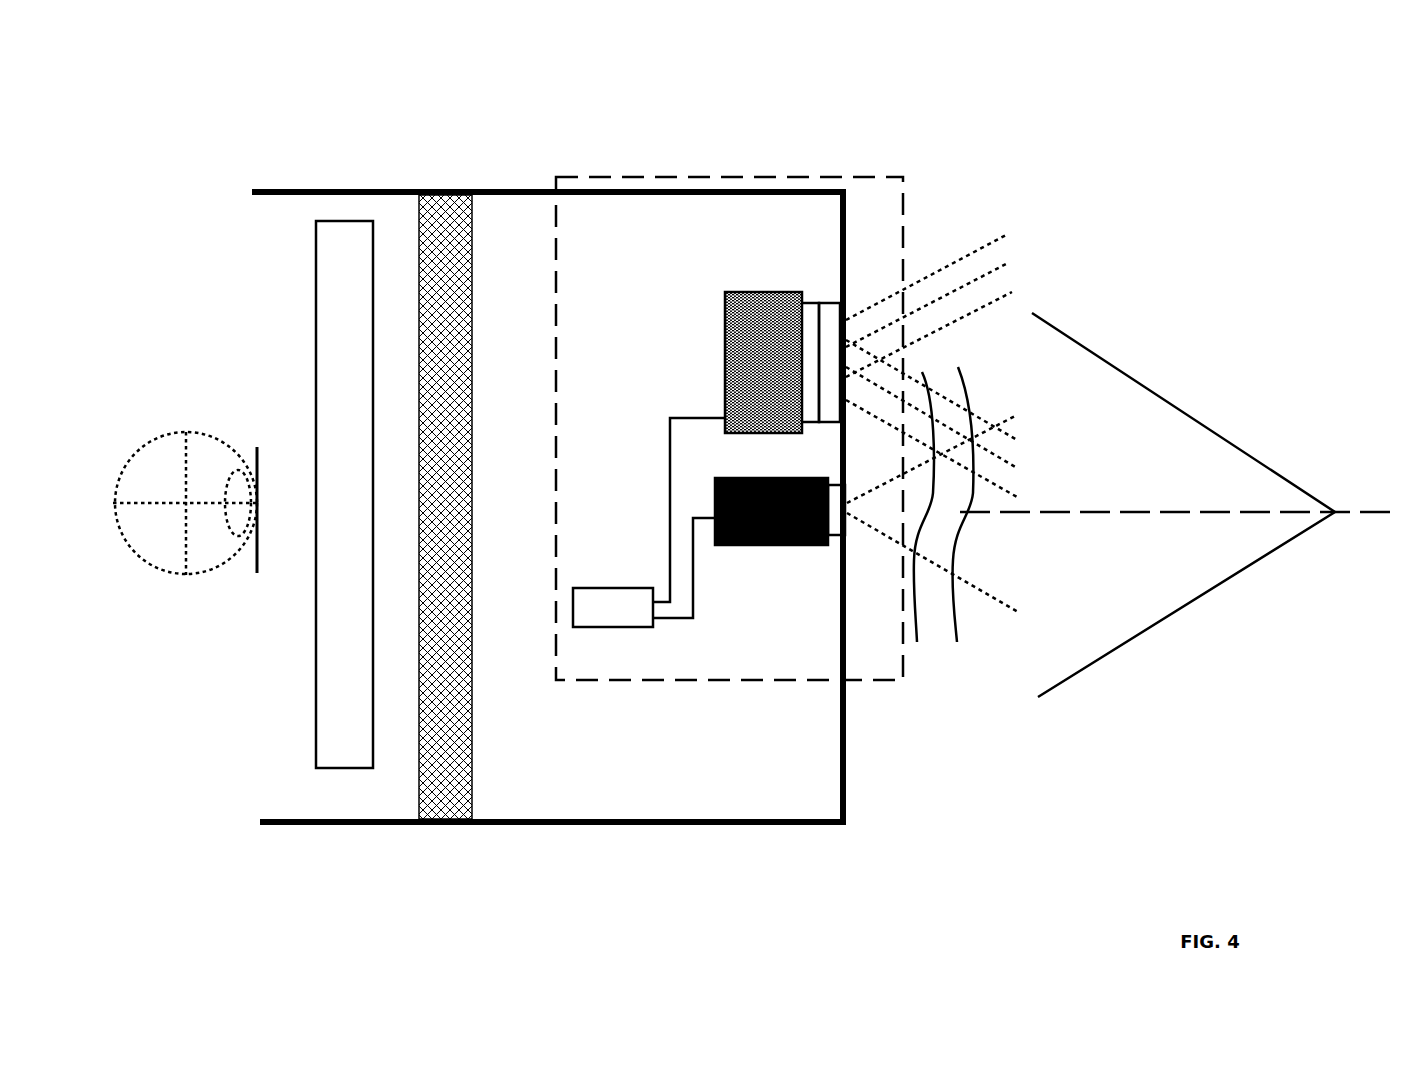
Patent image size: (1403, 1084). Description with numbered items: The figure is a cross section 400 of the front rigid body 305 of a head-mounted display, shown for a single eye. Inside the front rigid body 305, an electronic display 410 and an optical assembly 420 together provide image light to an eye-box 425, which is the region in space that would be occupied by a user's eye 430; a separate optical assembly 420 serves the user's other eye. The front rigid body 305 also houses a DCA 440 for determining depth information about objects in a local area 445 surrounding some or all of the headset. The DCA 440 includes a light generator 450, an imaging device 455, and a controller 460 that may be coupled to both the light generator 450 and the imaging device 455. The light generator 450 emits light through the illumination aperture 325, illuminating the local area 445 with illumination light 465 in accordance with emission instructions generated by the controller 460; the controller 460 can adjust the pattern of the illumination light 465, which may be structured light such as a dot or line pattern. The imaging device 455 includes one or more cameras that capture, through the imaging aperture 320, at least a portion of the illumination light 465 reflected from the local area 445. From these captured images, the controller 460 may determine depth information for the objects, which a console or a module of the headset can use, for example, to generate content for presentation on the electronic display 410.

The cross section 400 is at (137, 101).
The front rigid body 305 is at (810, 826).
The imaging aperture 320 is at (847, 527).
The illumination aperture 325 is at (846, 308).
The electronic display 410 is at (417, 250).
The optical assembly 420 is at (360, 768).
The eye-box 425 is at (257, 447).
The eye 430 is at (147, 565).
The DCA 440 is at (590, 177).
The local area 445 is at (1185, 592).
The light generator 450 is at (763, 292).
The imaging device 455 is at (773, 545).
The controller 460 is at (585, 627).
The illumination light 465 is at (963, 282).